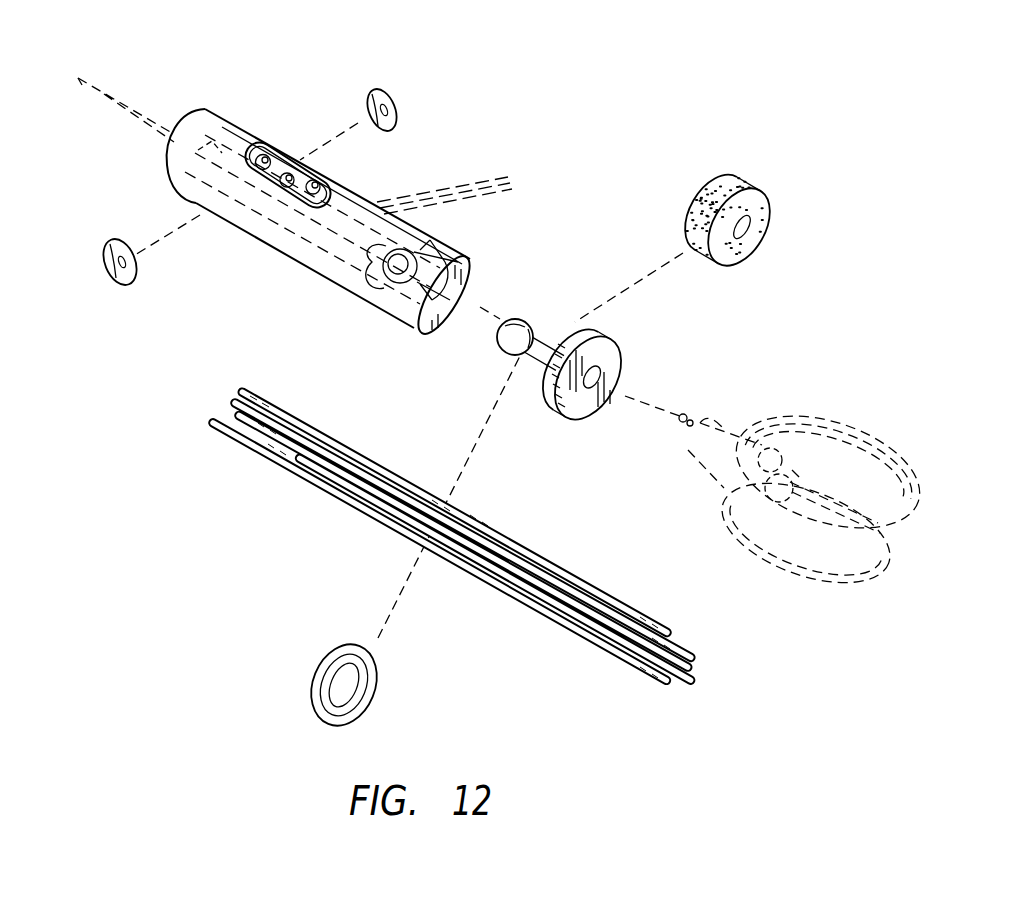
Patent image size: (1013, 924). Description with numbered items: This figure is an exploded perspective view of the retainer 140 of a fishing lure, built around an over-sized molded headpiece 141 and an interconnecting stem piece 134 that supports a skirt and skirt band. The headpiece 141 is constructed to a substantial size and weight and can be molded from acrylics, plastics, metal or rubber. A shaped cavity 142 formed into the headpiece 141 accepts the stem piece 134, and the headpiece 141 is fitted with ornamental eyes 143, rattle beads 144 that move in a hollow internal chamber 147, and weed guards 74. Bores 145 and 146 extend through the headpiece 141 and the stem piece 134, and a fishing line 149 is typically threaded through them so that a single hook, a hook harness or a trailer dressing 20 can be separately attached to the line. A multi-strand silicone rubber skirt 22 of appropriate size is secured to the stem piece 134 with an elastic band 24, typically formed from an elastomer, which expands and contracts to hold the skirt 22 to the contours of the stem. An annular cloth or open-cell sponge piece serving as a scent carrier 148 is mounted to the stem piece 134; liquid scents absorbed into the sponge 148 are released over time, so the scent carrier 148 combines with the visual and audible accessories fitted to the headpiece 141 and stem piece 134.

The dressing 20 is at (741, 433).
The skirt 22 is at (483, 528).
The band 24 is at (378, 680).
The weed guards 74 is at (455, 183).
The stem piece 134 is at (499, 352).
The retainer 140 is at (520, 215).
The headpiece 141 is at (320, 278).
The shaped cavity 142 is at (452, 293).
The ornamental eyes 143 is at (392, 94).
The rattle beads 144 is at (322, 186).
The bore 145 is at (222, 160).
The bore 146 is at (600, 378).
The hollow internal chamber 147 is at (252, 152).
The scent carrier 148 is at (733, 173).
The fishing line 149 is at (128, 108).